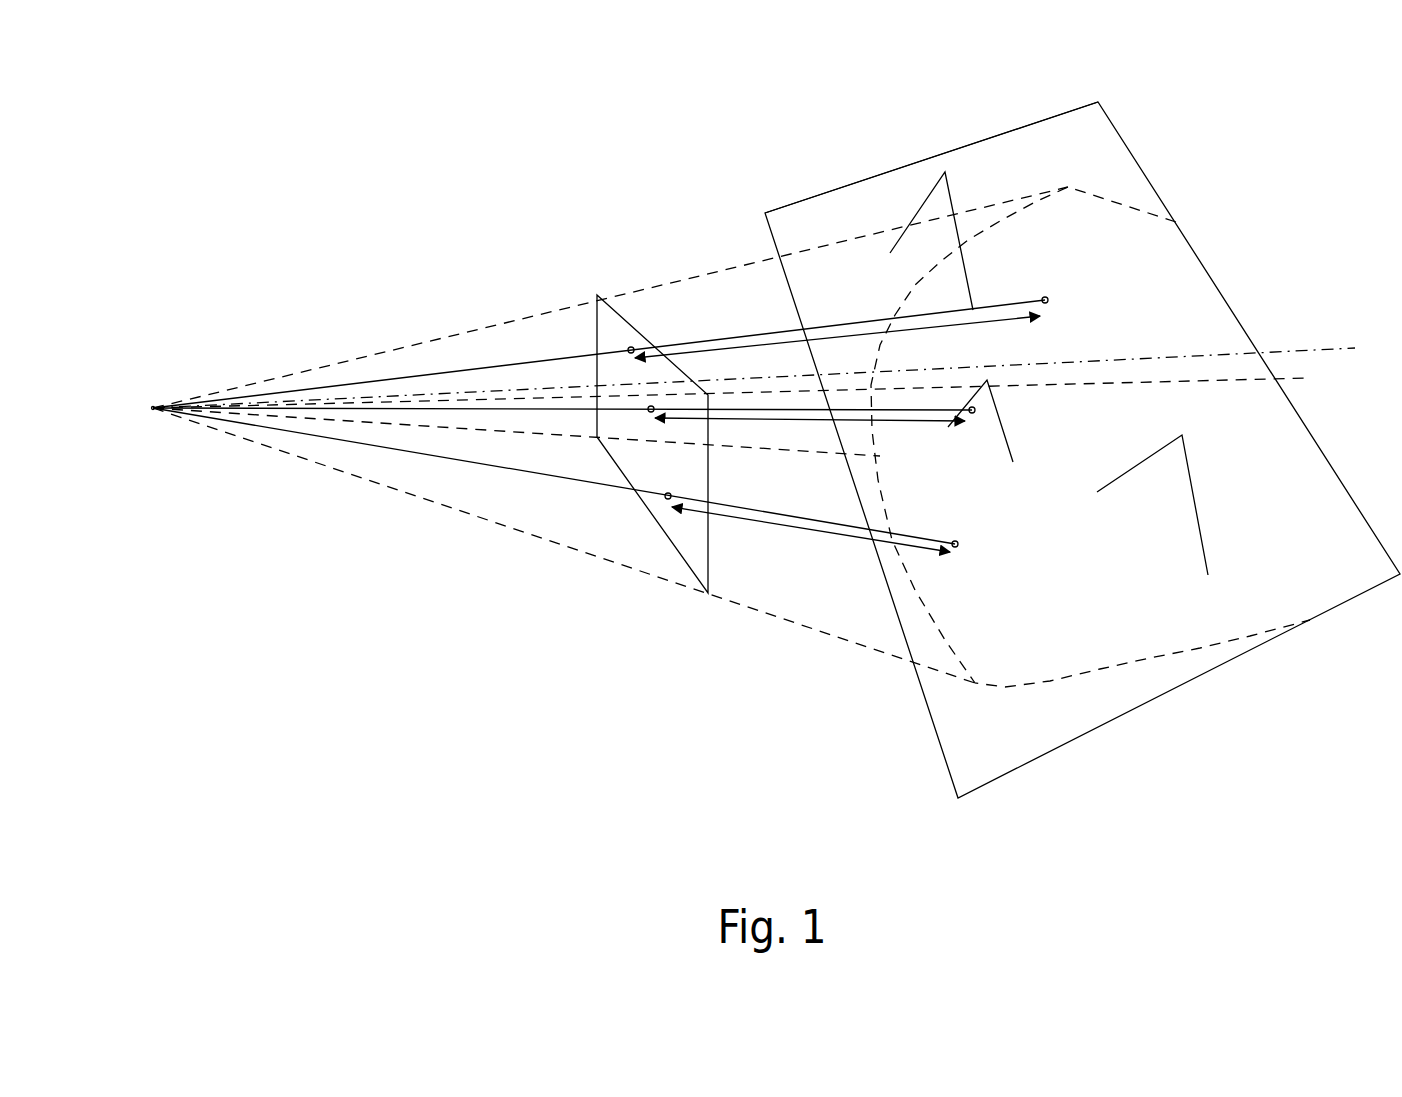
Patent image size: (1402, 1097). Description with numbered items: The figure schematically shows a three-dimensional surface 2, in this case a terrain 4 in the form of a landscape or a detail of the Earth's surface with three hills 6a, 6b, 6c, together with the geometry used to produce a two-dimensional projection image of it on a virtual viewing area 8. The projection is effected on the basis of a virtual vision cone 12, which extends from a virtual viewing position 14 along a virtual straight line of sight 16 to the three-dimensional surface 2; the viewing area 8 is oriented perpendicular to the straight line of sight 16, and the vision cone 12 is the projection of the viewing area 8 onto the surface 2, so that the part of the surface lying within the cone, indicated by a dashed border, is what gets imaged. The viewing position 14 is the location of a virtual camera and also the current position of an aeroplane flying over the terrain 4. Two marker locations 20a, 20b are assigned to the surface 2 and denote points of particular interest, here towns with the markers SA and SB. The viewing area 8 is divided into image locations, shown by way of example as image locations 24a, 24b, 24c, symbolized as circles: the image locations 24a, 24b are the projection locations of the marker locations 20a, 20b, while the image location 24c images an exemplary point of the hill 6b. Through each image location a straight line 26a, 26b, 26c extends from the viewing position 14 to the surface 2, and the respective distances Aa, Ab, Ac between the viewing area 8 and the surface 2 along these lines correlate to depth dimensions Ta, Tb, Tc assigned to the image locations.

The 3D surface 2 is at (1113, 123).
The terrain 4 is at (1052, 138).
The hill 6a is at (923, 200).
The hill 6b is at (1013, 460).
The hill 6c is at (1205, 545).
The viewing area 8 is at (597, 330).
The vision cone 12 is at (729, 435).
The viewing position 14 is at (152, 406).
The straight line of sight 16 is at (1281, 352).
The marker location 20a is at (1045, 300).
The marker location 20b is at (955, 544).
The image location 24a is at (631, 350).
The image location 24b is at (668, 496).
The image location 24c is at (651, 409).
The straight line 26a is at (460, 368).
The straight line 26b is at (405, 452).
The straight line 26c is at (535, 408).
The distance Aa is at (837, 338).
The distance Ab is at (811, 533).
The distance Ac is at (810, 433).